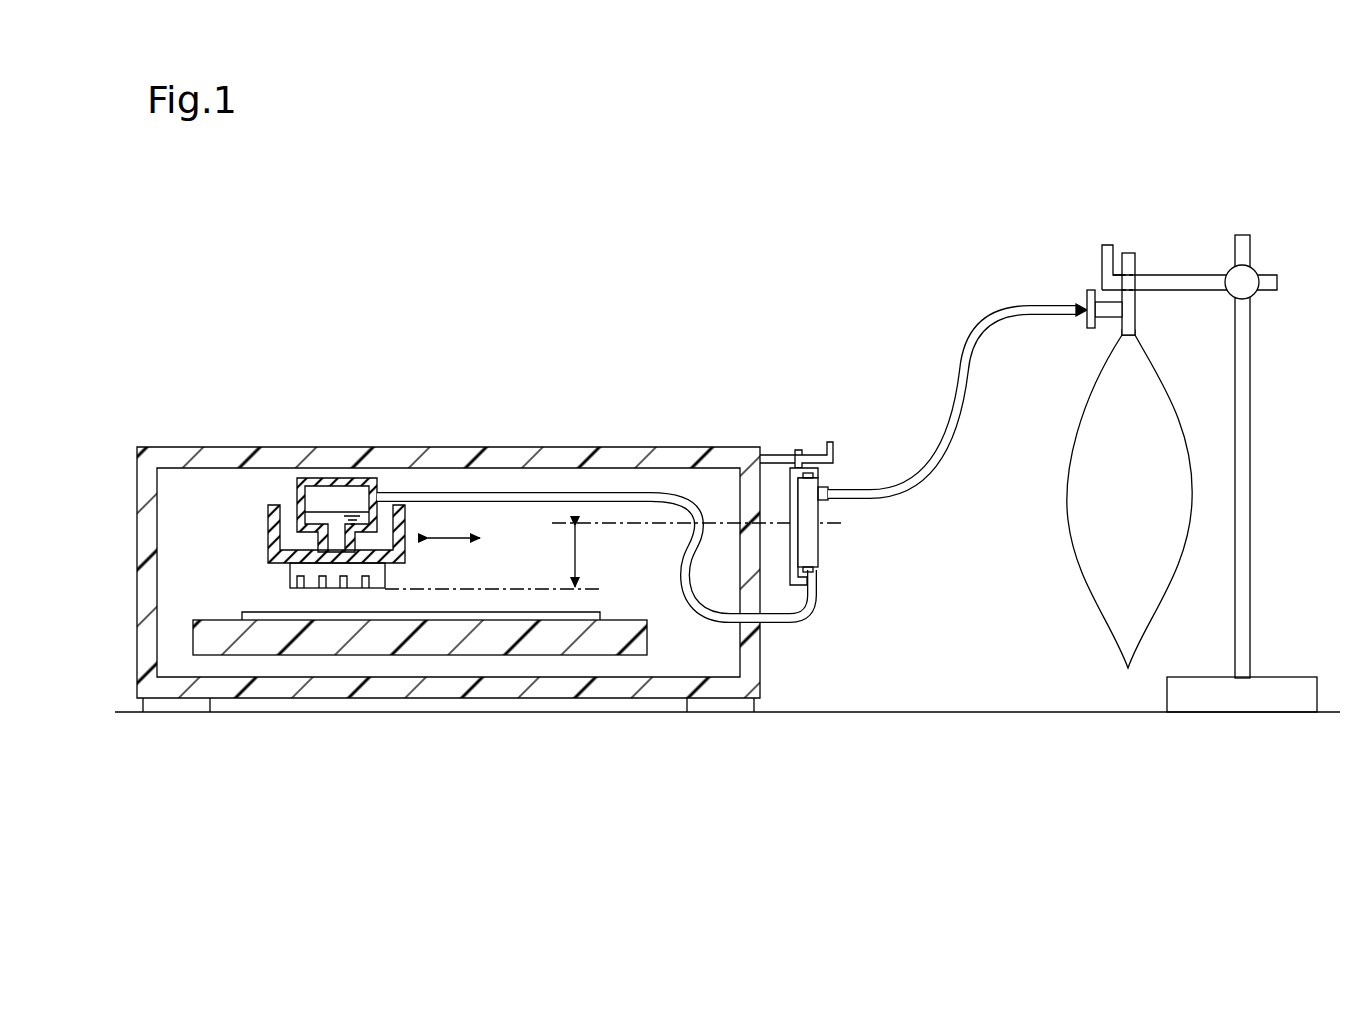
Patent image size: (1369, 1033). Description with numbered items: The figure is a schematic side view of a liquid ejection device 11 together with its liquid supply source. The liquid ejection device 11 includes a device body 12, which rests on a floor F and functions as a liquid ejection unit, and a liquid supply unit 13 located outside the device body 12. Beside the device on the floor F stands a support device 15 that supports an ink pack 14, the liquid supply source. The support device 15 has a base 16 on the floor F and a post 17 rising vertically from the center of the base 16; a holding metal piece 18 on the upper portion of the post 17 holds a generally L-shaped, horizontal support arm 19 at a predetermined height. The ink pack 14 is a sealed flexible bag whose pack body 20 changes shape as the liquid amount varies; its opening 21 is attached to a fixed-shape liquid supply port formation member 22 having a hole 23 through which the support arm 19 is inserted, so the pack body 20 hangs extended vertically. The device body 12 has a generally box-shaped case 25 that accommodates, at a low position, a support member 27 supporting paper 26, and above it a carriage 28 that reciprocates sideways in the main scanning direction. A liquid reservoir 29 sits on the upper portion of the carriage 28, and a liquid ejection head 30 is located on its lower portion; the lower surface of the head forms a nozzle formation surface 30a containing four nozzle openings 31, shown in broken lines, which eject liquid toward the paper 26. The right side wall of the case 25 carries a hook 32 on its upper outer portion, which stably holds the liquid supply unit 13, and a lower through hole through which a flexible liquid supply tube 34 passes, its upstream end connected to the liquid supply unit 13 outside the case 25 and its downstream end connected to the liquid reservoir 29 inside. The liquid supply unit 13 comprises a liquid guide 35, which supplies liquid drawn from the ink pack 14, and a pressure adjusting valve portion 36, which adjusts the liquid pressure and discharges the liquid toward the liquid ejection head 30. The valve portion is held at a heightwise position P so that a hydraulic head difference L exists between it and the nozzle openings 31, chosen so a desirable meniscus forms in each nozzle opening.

The liquid ejection device 11 is at (580, 185).
The device body 12 is at (240, 375).
The liquid supply unit 13 is at (865, 352).
The ink pack 14 is at (1085, 242).
The support device 15 is at (1300, 192).
The base 16 is at (1292, 676).
The post 17 is at (1250, 490).
The holding metal piece 18 is at (1258, 276).
The support arm 19 is at (1182, 274).
The pack body 20 is at (1067, 525).
The opening 21 is at (1120, 335).
The liquid supply port formation member 22 is at (1135, 317).
The hole 23 is at (1137, 284).
The case 25 is at (197, 447).
The paper 26 is at (582, 610).
The support member 27 is at (647, 640).
The carriage 28 is at (268, 526).
The liquid reservoir 29 is at (297, 488).
The liquid ejection head 30 is at (290, 579).
The nozzle formation surface 30a is at (383, 590).
The nozzle openings 31 is at (300, 596).
The hook 32 is at (833, 449).
The liquid supply tube 34 is at (522, 504).
The liquid guide 35 is at (900, 377).
The pressure adjusting valve portion 36 is at (797, 412).
The hydraulic head difference L is at (584, 556).
The heightwise position P is at (708, 525).
The floor F is at (955, 712).